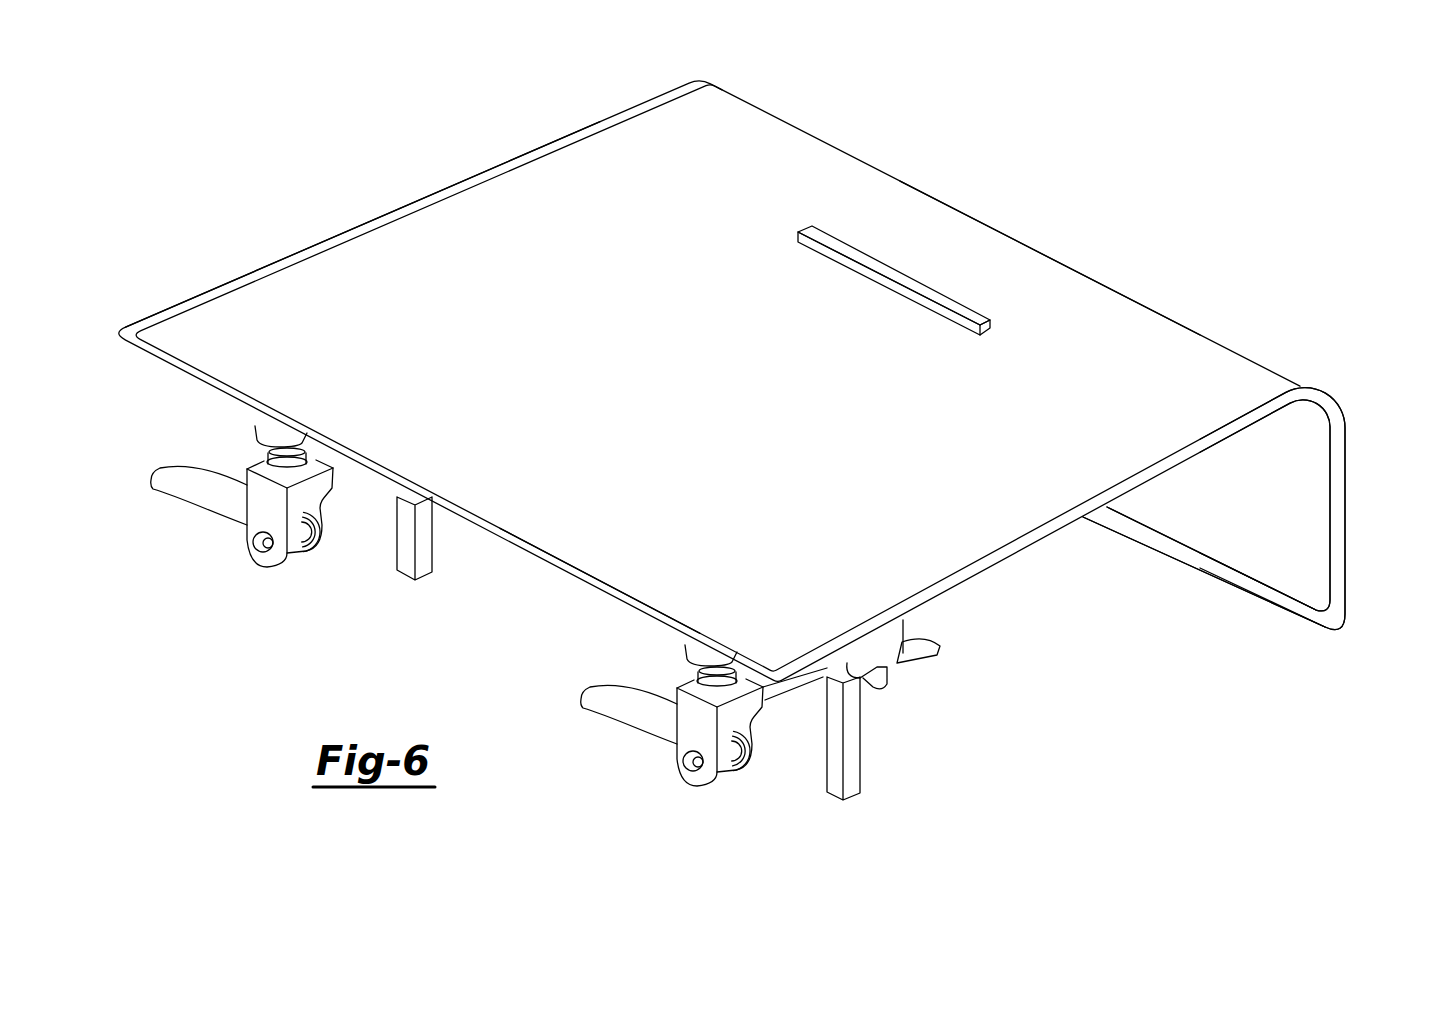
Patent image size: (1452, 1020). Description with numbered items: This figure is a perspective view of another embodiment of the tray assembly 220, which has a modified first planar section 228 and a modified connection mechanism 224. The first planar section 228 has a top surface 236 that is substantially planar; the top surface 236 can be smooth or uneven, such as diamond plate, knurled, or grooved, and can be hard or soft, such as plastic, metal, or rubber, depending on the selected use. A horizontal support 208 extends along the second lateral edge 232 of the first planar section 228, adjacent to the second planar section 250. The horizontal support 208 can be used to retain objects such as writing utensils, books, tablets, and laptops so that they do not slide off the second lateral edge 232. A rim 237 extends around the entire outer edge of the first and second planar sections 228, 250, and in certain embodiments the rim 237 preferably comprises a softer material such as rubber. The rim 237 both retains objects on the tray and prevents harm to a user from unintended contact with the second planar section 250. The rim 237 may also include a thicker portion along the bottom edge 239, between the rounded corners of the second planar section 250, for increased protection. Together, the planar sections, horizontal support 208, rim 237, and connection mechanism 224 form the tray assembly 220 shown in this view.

The tray assembly 220 is at (1044, 170).
The first planar section 228 is at (616, 170).
The horizontal support 208 is at (888, 272).
The second lateral edge 232 is at (1103, 307).
The top surface 236 is at (709, 388).
The rim 237 is at (277, 265).
The connection mechanism 224 is at (188, 446).
The second planar section 250 is at (1343, 552).
The bottom edge 239 is at (1217, 578).